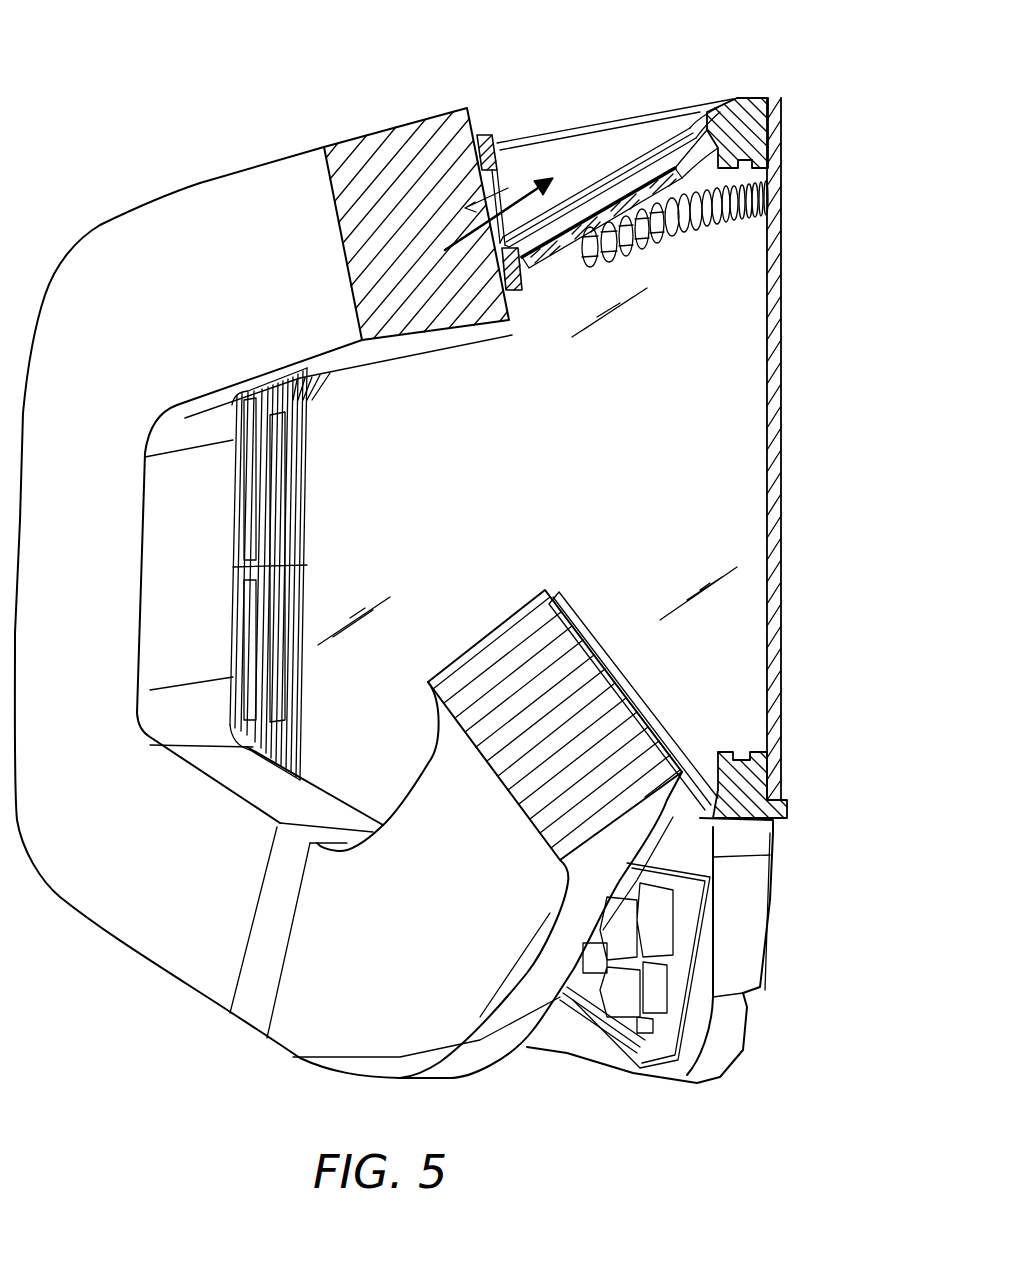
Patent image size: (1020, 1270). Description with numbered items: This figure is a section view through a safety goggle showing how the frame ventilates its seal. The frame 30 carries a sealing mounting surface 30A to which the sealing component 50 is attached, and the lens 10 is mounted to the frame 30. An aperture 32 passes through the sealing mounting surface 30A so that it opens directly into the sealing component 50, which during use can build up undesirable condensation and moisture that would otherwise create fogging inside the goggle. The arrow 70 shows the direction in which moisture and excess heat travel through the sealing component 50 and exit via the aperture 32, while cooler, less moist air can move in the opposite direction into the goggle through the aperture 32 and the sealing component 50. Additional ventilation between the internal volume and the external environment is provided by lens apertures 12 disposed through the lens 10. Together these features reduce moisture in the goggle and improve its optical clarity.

The lens 10 is at (784, 390).
The lens apertures 12 is at (713, 237).
The frame 30 is at (741, 97).
The sealing mounting surface 30A is at (481, 134).
The aperture 32 is at (470, 225).
The sealing component 50 is at (200, 183).
The arrow 70 is at (465, 242).